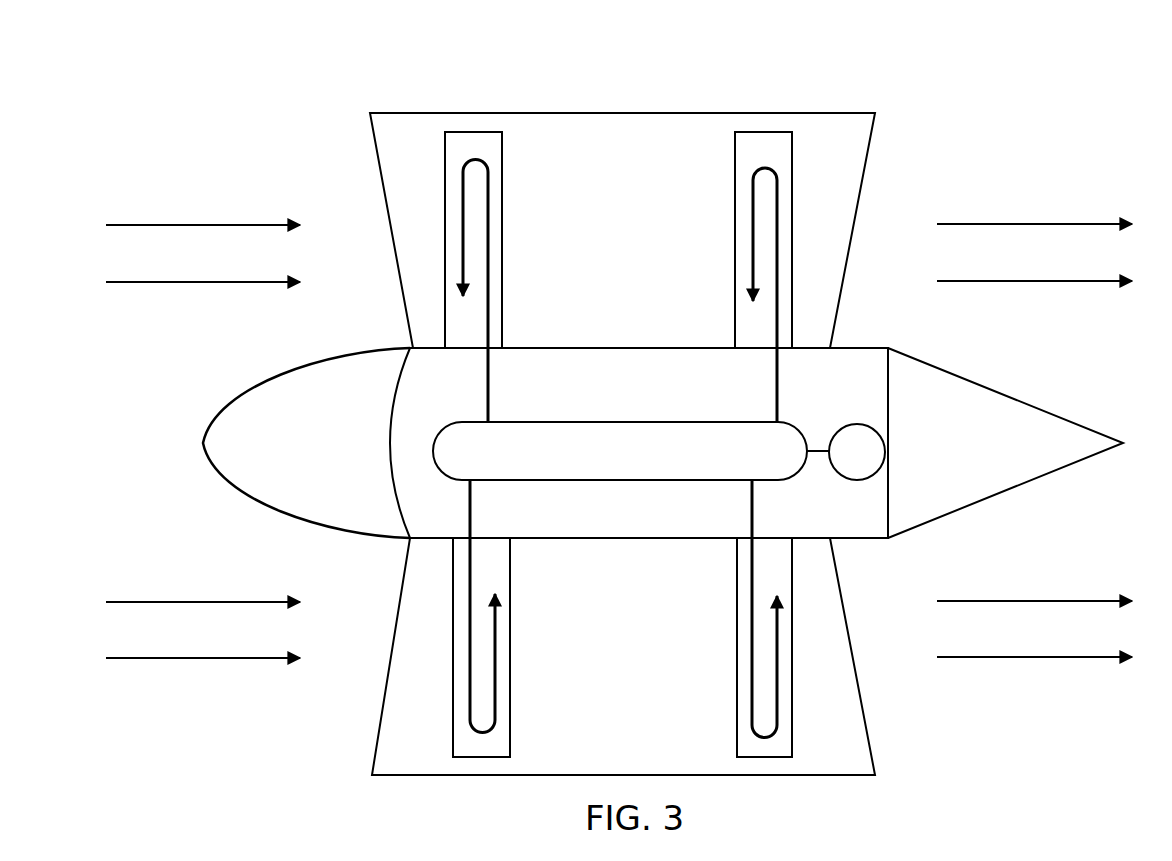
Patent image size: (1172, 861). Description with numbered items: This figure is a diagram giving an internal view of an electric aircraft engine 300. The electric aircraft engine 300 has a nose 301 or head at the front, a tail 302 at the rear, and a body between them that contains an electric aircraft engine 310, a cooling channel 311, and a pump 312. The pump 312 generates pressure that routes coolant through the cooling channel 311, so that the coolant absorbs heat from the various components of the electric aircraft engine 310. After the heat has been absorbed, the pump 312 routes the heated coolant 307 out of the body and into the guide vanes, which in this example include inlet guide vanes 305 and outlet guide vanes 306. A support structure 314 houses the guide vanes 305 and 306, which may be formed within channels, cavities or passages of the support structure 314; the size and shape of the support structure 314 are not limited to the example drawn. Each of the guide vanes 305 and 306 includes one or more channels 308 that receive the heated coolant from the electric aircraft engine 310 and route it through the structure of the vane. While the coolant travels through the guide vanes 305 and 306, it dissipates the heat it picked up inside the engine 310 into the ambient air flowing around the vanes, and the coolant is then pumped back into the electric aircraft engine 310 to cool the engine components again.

The electric aircraft engine 300 is at (388, 57).
The nose 301 is at (227, 470).
The tail 302 is at (1013, 420).
The inlet guide vanes 305 is at (502, 168).
The outlet guide vanes 306 is at (735, 168).
The heated coolant 307 is at (490, 297).
The channels 308 is at (463, 238).
The electric aircraft engine 310 is at (639, 443).
The cooling channel 311 is at (752, 420).
The pump 312 is at (838, 424).
The support structure 314 is at (873, 137).